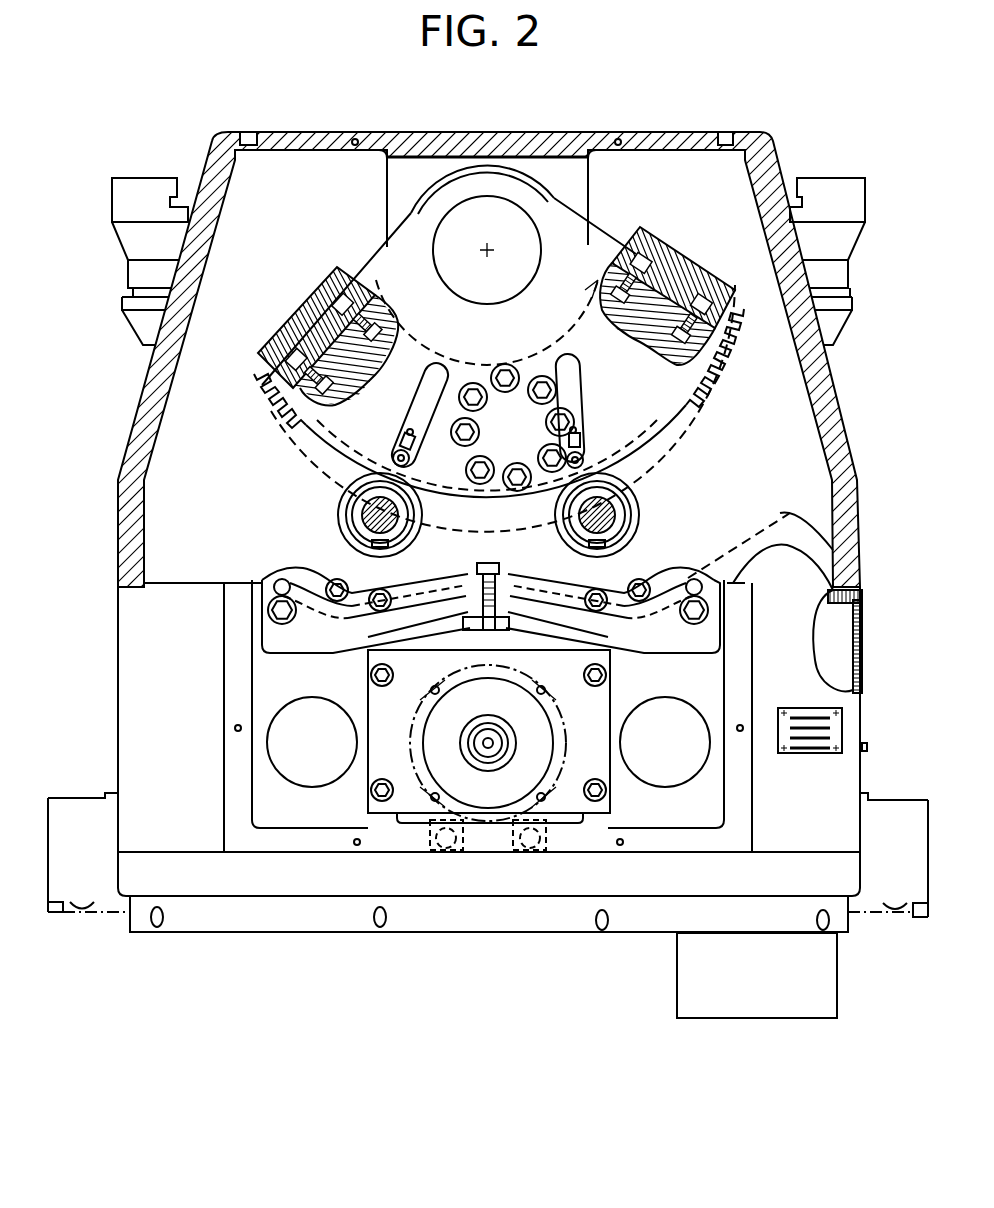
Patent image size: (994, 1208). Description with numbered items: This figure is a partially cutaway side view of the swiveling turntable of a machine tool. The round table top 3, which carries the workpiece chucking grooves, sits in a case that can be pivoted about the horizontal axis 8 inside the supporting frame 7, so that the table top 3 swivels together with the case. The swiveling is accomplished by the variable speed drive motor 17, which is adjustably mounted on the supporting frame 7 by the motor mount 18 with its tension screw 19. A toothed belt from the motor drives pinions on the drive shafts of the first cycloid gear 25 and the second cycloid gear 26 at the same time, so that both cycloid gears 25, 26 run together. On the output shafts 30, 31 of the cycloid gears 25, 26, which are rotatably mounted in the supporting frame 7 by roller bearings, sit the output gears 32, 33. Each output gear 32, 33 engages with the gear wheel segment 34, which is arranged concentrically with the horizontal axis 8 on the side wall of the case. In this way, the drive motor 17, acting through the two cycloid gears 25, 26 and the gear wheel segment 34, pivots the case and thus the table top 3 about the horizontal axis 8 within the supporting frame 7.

The round table top 3 is at (828, 205).
The supporting frame 7 is at (552, 140).
The horizontal axis 8 is at (485, 256).
The variable speed drive motor 17 is at (452, 785).
The motor mount 18 is at (566, 800).
The tension screw 19 is at (480, 580).
The first cycloid gear 25 is at (355, 590).
The second cycloid gear 26 is at (620, 590).
The output shaft of first cycloid gear 30 is at (376, 507).
The output shaft of second cycloid gear 31 is at (600, 506).
The output gear 32 is at (360, 520).
The output gear 33 is at (612, 520).
The gear wheel segment 34 is at (688, 396).